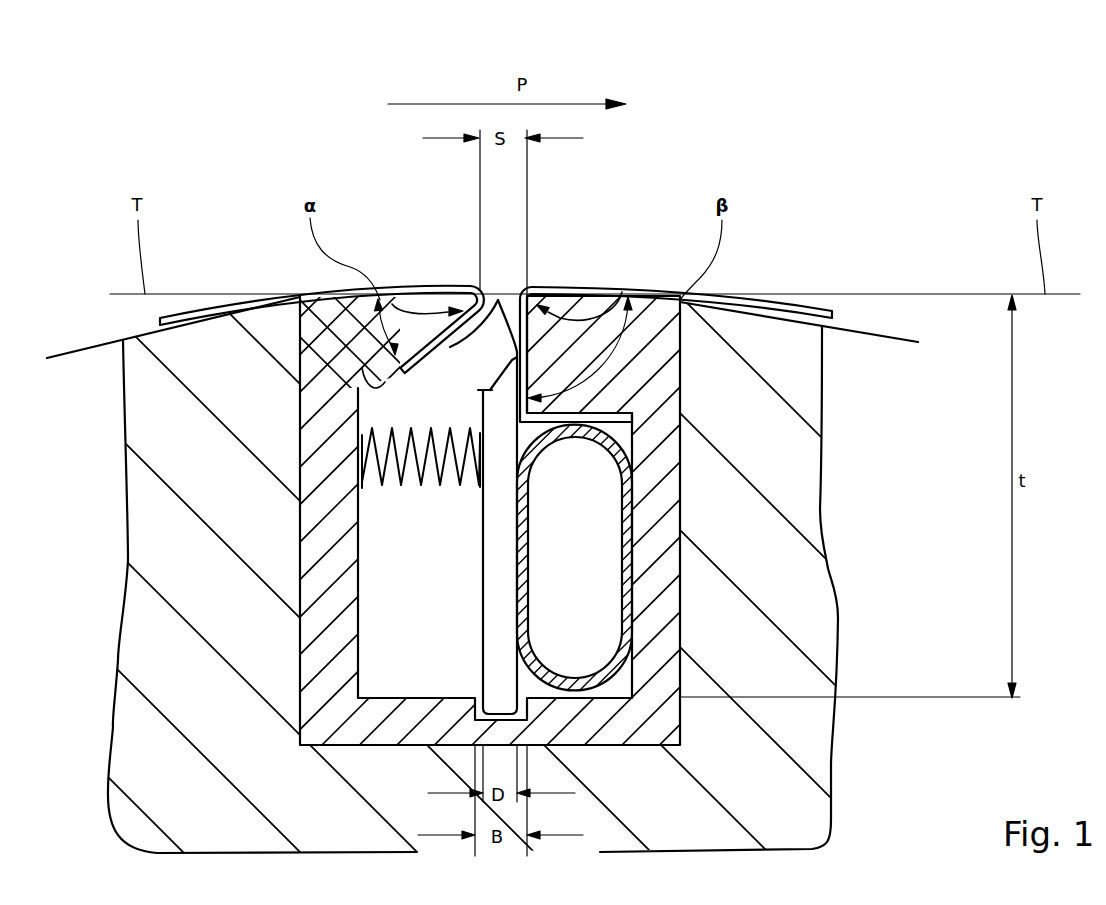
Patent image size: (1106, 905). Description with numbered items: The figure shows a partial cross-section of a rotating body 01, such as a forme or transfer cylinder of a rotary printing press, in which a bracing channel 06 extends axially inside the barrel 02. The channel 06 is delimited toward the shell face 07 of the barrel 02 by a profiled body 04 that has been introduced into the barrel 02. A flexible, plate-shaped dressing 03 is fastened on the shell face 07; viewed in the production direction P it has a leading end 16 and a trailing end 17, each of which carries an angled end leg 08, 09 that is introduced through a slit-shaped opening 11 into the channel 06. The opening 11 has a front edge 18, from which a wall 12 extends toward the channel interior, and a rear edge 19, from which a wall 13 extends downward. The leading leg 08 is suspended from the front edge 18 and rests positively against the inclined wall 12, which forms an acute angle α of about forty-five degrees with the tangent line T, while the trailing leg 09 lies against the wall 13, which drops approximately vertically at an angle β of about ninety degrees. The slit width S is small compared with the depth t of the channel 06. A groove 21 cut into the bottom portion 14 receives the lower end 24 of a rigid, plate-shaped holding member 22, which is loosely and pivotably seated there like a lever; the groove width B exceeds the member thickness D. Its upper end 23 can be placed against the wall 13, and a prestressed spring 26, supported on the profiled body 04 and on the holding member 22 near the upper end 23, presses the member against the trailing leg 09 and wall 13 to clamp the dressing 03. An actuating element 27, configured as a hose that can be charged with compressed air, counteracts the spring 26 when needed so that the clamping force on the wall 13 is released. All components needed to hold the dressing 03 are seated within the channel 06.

The rotating body 01 is at (650, 78).
The barrel 02 is at (757, 794).
The dressing 03 is at (160, 321).
The profiled body 04 is at (312, 596).
The bracing channel 06 is at (420, 561).
The shell face 07 is at (875, 330).
The leading end leg 08 is at (498, 300).
The trailing end leg 09 is at (522, 291).
The opening 11 is at (510, 274).
The wall 12 is at (301, 295).
The wall 13 is at (682, 413).
The bottom portion 14 is at (598, 742).
The leading end 16 is at (463, 284).
The trailing end 17 is at (548, 283).
The front edge 18 is at (400, 302).
The rear edge 19 is at (622, 292).
The groove 21 is at (390, 747).
The holding member 22 is at (483, 590).
The upper end 23 is at (478, 393).
The lower end 24 is at (500, 706).
The spring 26 is at (382, 478).
The actuating element 27 is at (627, 598).